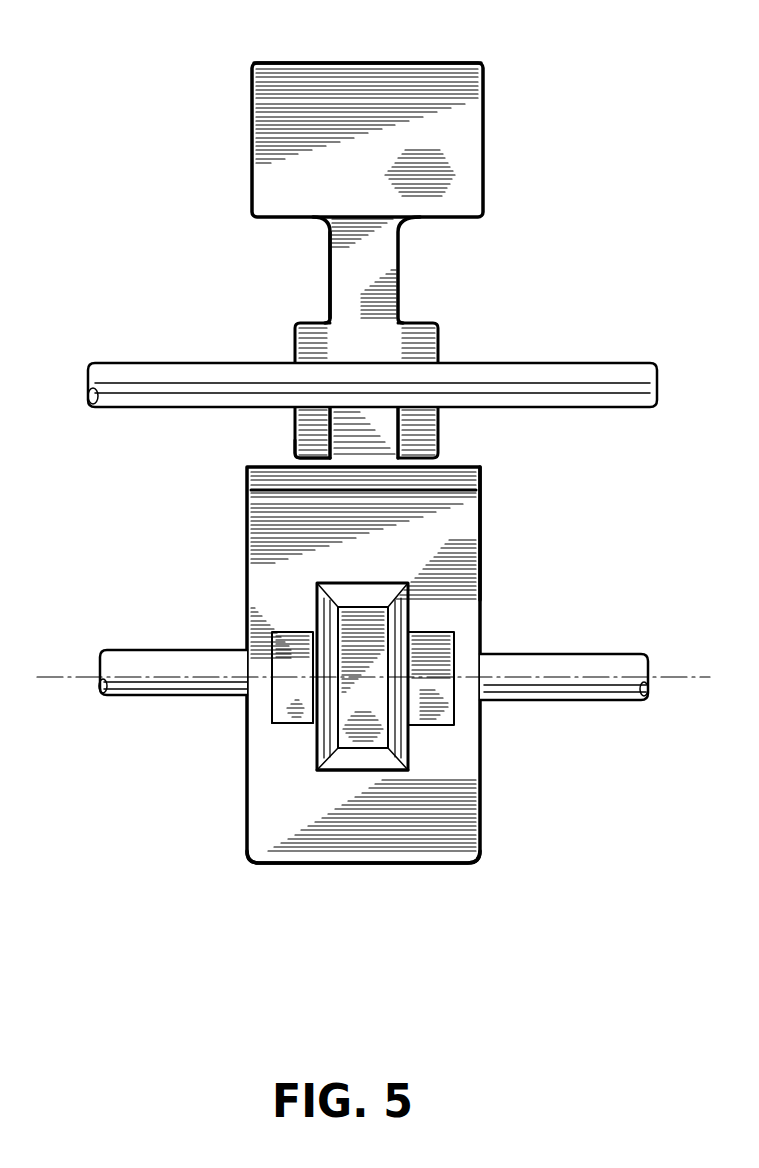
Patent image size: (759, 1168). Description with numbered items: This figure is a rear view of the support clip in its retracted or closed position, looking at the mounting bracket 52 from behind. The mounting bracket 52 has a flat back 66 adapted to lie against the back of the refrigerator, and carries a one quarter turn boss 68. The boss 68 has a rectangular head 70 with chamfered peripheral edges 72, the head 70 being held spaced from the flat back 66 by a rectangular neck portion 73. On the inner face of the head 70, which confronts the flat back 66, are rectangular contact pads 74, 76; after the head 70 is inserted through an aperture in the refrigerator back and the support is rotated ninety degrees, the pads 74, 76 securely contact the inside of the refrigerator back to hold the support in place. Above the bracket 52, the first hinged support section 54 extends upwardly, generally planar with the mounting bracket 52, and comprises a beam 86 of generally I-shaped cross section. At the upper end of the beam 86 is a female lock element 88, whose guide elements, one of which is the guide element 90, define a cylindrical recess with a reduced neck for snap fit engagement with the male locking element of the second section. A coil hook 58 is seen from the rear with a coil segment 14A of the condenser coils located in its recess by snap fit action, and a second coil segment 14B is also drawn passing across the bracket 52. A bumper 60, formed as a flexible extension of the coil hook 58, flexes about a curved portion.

The guide element 90 is at (427, 63).
The female lock element 88 is at (470, 184).
The first hinged support section 54 is at (322, 253).
The beam 86 is at (398, 272).
The coil hook 58 is at (438, 348).
The coil segment 14A is at (168, 362).
The bumper 60 is at (292, 455).
The mounting bracket 52 is at (234, 852).
The contact pad 74 is at (480, 578).
The rectangular neck portion 73 is at (240, 603).
The second wire 14B is at (155, 650).
The rectangular head 70 is at (445, 617).
The one quarter turn boss 68 is at (410, 752).
The chamfered peripheral edges 72 is at (360, 768).
The contact pad 76 is at (445, 785).
The flat back 66 is at (462, 851).